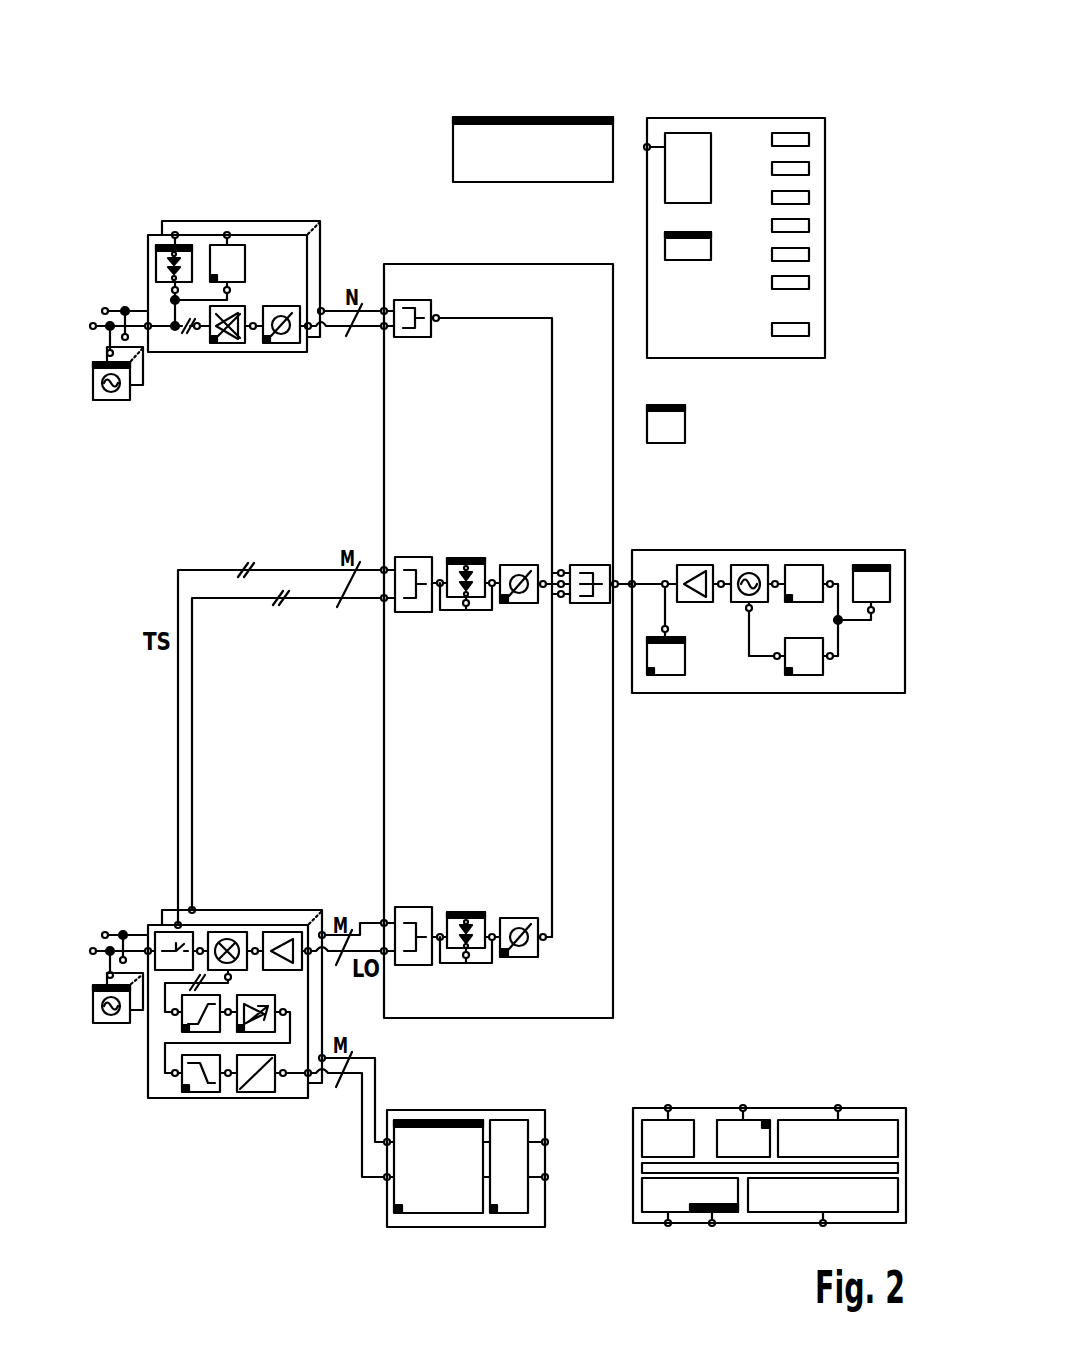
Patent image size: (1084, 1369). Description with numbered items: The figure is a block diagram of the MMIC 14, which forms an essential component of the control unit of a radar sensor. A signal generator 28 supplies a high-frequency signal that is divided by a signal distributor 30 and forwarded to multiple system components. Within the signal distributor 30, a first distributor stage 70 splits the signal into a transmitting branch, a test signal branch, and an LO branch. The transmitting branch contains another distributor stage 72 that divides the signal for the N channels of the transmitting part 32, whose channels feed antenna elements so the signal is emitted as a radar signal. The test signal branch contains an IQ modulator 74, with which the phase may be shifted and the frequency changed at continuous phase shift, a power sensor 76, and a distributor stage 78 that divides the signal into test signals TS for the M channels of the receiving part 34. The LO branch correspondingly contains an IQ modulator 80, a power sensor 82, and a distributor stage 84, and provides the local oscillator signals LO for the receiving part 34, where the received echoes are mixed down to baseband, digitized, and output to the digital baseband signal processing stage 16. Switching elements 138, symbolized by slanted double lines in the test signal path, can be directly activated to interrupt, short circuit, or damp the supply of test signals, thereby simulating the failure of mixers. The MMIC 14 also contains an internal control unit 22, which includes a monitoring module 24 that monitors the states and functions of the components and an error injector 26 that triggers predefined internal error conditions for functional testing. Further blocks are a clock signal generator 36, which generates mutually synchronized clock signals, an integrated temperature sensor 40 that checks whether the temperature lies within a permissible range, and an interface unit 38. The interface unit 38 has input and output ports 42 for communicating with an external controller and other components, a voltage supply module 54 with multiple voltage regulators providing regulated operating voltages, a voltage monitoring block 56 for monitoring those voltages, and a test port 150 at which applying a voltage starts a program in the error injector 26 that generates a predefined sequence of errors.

The MMIC 14 is at (206, 1251).
The digital baseband signal processing stage 16 is at (340, 1180).
The internal control unit 22 is at (786, 1098).
The monitoring module 24 is at (642, 1198).
The error injector 26 is at (642, 1142).
The signal generator 28 is at (786, 533).
The signal distributor 30 is at (338, 463).
The transmitting part 32 is at (246, 210).
The receiving part 34 is at (246, 898).
The clock signal generator 36 is at (438, 150).
The interface unit 38 is at (748, 106).
The temperature sensor 40 is at (685, 425).
The input and output ports 42 is at (809, 139).
The voltage supply module 54 is at (688, 133).
The voltage monitoring block 56 is at (665, 244).
The first distributor stage 70 is at (590, 565).
The distributor stage 72 is at (413, 337).
The IQ modulator 74 is at (519, 565).
The power sensor 76 is at (464, 558).
The distributor stage 78 is at (413, 612).
The IQ modulator 80 is at (520, 918).
The power sensor 82 is at (466, 912).
The distributor stage 84 is at (410, 907).
The switching elements 138 is at (281, 603).
The test port 150 is at (809, 330).